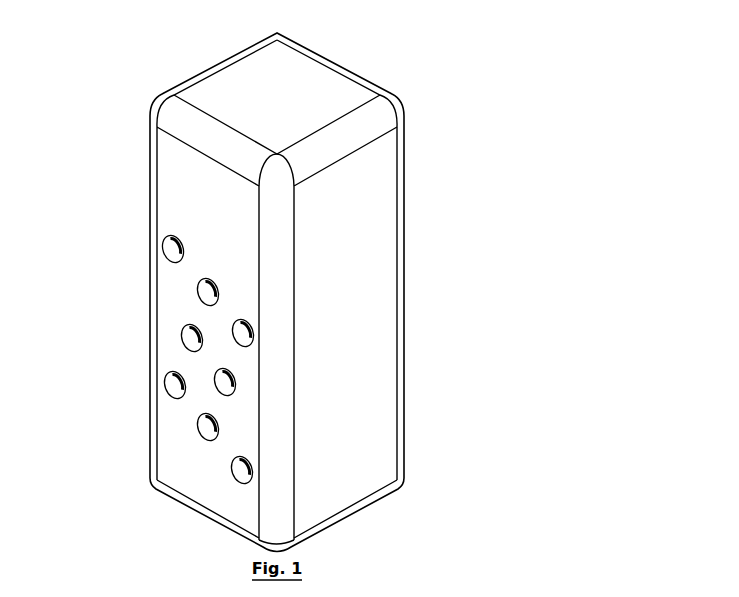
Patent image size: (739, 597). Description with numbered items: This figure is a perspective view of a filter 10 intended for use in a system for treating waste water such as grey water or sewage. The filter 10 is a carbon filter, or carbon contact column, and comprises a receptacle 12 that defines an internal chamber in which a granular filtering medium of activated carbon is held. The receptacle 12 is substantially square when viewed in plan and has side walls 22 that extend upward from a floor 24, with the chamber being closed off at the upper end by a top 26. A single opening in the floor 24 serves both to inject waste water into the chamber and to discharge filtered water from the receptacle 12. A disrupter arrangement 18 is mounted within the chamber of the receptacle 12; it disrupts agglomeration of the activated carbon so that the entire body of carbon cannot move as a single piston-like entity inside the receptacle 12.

The filter 10 is at (503, 277).
The receptacle 12 is at (404, 318).
The disrupter arrangement 18 is at (180, 352).
The side walls 22 is at (360, 400).
The floor 24 is at (347, 518).
The top 26 is at (348, 82).